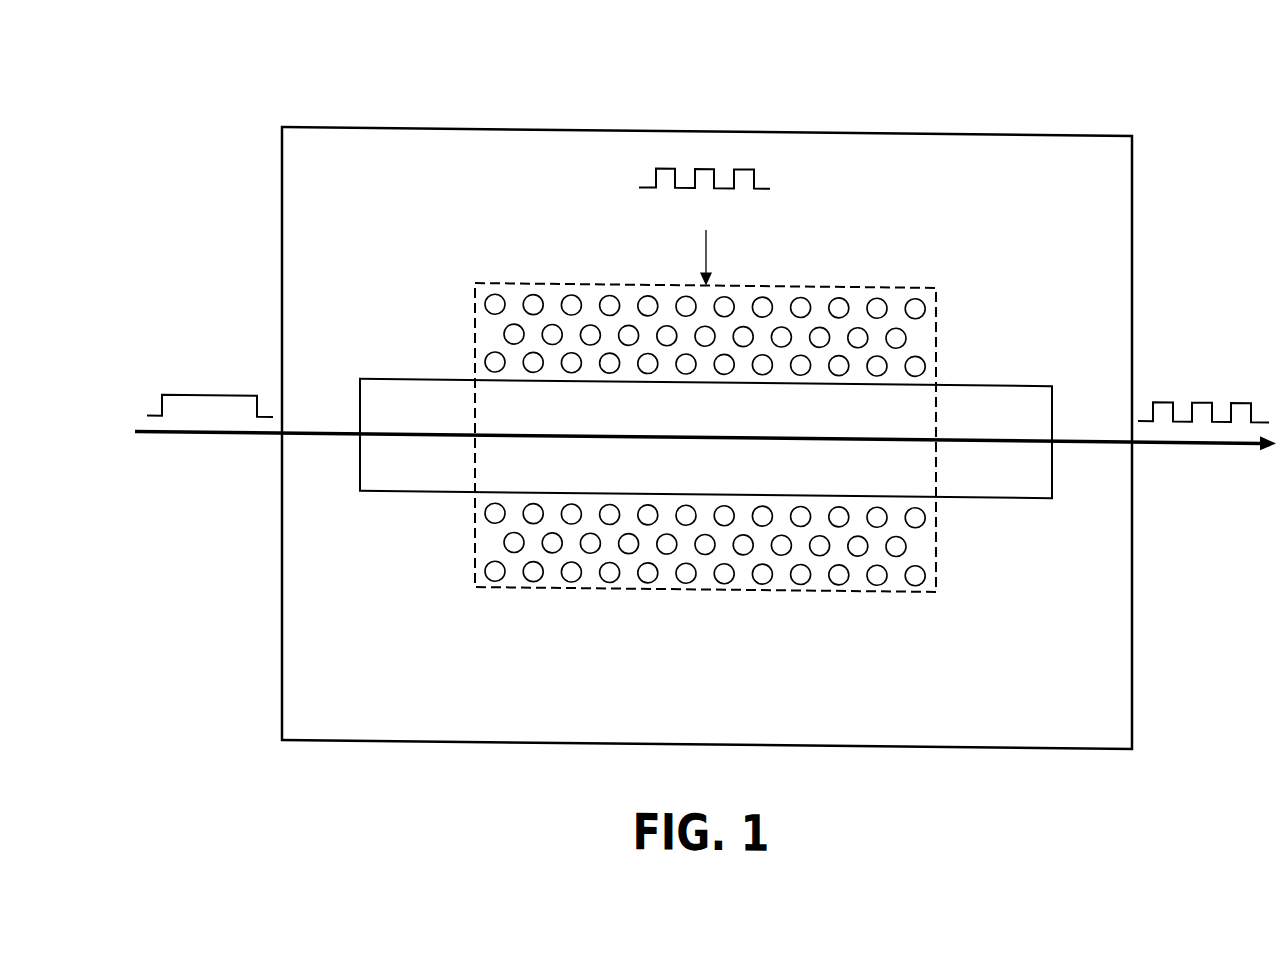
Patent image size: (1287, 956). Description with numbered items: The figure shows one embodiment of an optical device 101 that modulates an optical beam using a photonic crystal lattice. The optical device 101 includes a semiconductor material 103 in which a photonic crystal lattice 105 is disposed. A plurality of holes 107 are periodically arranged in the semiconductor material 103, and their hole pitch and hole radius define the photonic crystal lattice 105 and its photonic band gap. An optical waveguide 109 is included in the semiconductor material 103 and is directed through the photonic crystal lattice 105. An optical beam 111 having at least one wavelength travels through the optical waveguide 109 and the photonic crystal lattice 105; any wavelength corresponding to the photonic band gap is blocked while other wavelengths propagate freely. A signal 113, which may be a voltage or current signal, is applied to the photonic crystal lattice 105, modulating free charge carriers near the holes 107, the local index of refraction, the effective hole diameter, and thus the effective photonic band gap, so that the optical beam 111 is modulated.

The optical device 101 is at (1168, 53).
The semiconductor material 103 is at (1120, 156).
The photonic crystal lattice 105 is at (936, 295).
The holes 107 is at (571, 292).
The optical waveguide 109 is at (1020, 490).
The optical beam 111 is at (203, 444).
The signal 113 is at (758, 208).